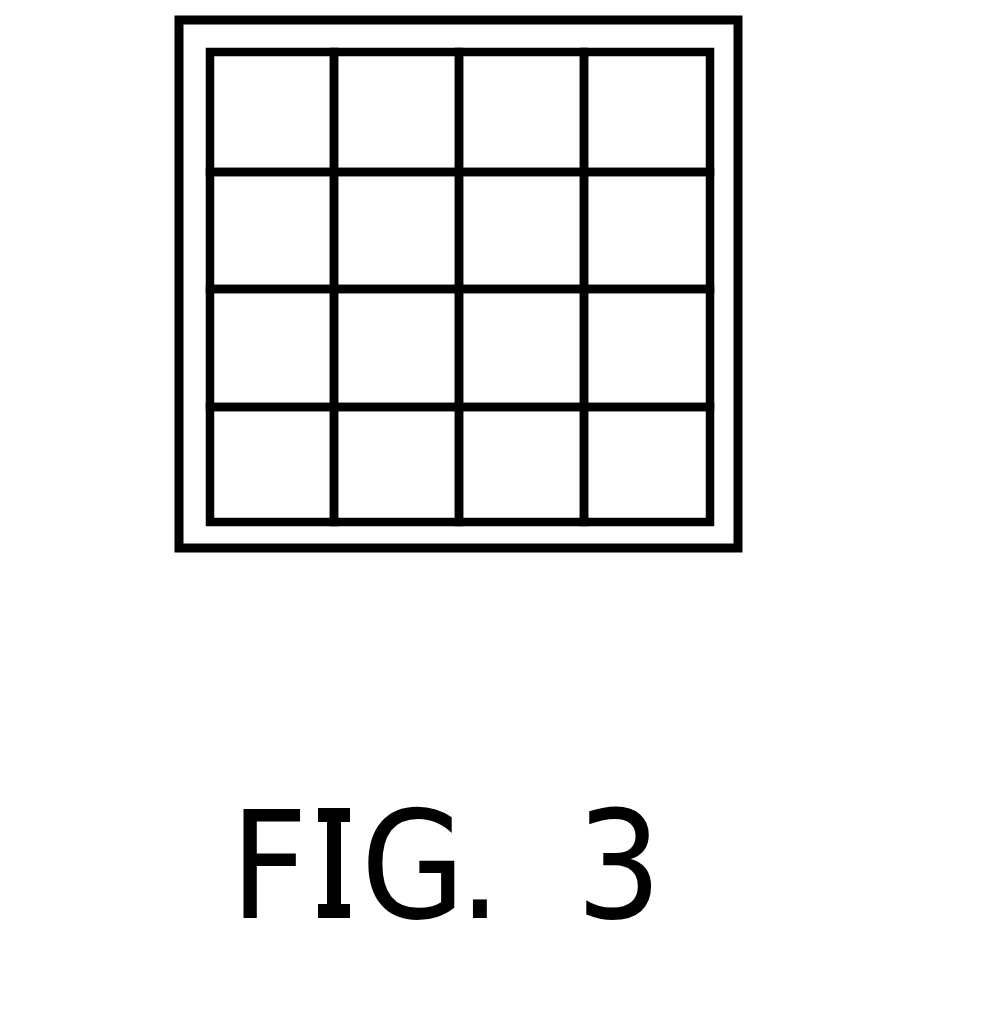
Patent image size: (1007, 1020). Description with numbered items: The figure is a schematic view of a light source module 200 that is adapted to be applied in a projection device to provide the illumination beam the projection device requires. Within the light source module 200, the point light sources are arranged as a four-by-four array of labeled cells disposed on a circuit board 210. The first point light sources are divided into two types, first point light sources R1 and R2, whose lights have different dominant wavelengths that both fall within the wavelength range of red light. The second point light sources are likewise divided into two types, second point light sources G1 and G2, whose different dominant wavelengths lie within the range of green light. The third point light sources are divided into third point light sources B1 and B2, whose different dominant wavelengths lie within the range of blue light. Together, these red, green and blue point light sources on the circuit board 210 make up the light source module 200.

The light source module 200 is at (625, 692).
The circuit board 210 is at (608, 287).
The first point light source R1 is at (459, 290).
The first point light source R2 is at (460, 287).
The second point light source G1 is at (460, 287).
The second point light source G2 is at (460, 287).
The third point light source B1 is at (460, 287).
The third point light source B2 is at (459, 290).